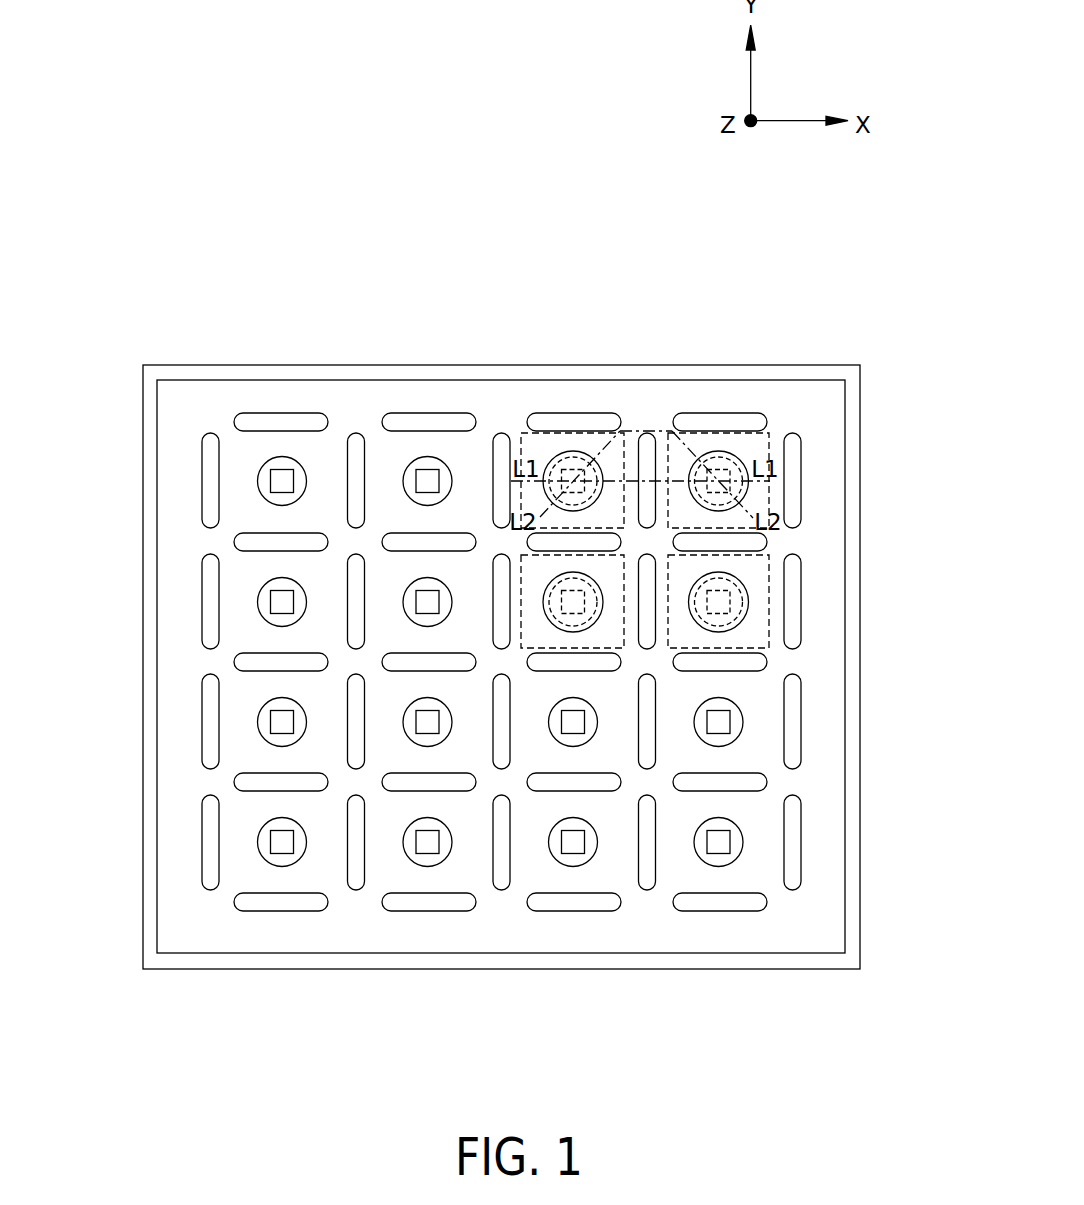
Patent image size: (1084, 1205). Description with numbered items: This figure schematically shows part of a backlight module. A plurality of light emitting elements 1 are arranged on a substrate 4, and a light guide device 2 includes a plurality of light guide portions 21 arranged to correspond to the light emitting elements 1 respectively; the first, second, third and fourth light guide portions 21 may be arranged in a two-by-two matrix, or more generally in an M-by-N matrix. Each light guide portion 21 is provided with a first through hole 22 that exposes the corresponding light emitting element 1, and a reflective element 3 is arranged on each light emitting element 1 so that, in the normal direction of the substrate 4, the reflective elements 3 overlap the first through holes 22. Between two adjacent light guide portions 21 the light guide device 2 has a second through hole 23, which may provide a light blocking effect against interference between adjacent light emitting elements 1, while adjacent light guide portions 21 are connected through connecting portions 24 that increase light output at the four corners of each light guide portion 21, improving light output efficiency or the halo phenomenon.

The light emitting element 1 is at (273, 600).
The light guide device 2 is at (212, 397).
The reflective element 3 is at (553, 453).
The substrate 4 is at (150, 417).
The light guide portion 21 is at (521, 433).
The first through hole 22 is at (273, 622).
The second through hole 23 is at (758, 543).
The connecting portion 24 is at (652, 418).